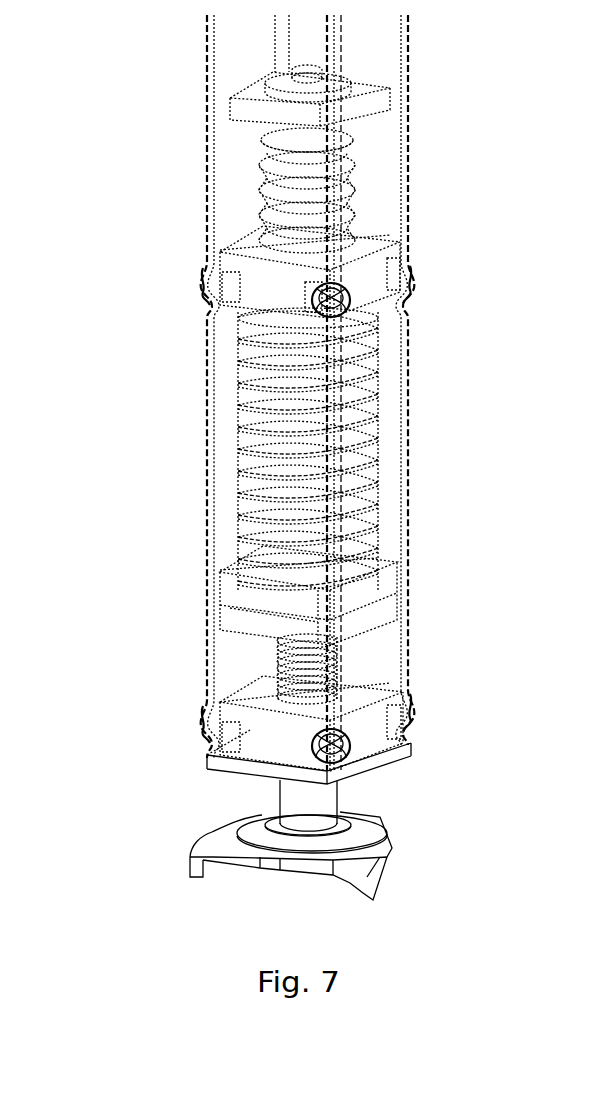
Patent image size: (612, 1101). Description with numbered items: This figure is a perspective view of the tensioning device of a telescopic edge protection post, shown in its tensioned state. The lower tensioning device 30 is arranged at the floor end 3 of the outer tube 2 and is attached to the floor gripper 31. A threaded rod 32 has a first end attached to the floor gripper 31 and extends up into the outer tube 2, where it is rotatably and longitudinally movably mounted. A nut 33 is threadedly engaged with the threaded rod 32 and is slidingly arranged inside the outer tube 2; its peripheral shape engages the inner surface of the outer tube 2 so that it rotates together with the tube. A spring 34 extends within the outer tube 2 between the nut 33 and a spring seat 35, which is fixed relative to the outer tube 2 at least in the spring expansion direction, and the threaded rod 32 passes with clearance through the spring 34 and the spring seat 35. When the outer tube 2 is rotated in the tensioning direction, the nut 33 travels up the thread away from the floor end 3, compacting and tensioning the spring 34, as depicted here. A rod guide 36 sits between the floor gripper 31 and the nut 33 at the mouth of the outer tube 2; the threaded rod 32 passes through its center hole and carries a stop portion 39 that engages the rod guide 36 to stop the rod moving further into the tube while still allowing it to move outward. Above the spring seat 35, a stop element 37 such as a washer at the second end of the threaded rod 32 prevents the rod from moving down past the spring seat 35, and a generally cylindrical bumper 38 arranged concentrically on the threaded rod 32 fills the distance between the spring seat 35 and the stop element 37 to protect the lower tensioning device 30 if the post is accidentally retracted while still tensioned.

The outer tube 2 is at (206, 177).
The floor end 3 is at (210, 760).
The lower tensioning device 30 is at (238, 387).
The floor gripper 31 is at (223, 833).
The threaded rod 32 is at (275, 660).
The nut 33 is at (237, 595).
The spring 34 is at (237, 478).
The spring seat 35 is at (215, 283).
The rod guide 36 is at (215, 735).
The stop element 37 is at (373, 105).
The bumper 38 is at (352, 190).
The stop portion 39 is at (322, 802).